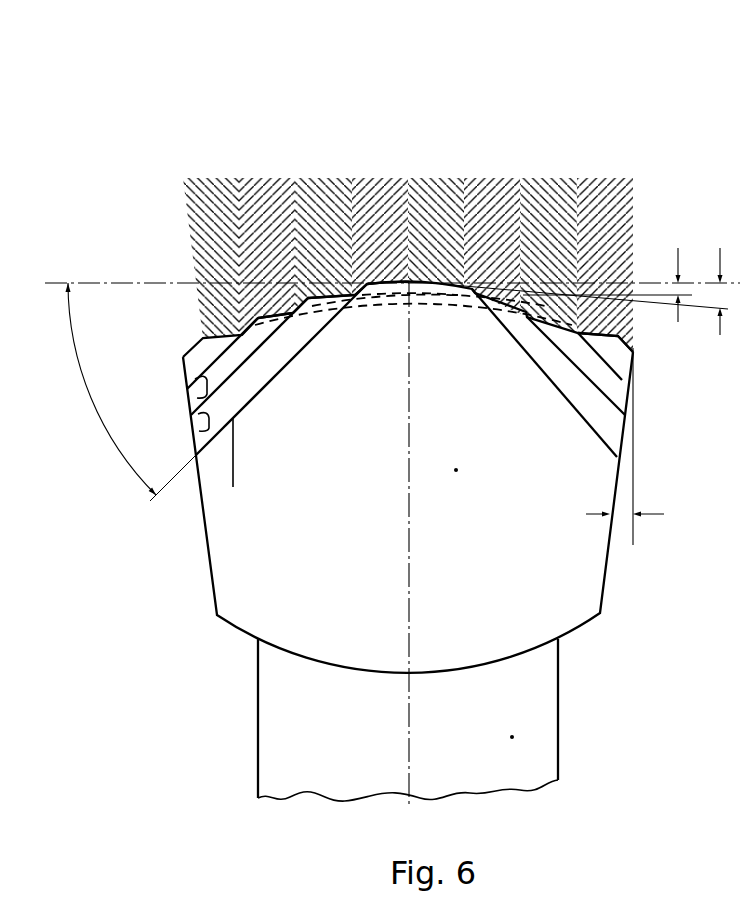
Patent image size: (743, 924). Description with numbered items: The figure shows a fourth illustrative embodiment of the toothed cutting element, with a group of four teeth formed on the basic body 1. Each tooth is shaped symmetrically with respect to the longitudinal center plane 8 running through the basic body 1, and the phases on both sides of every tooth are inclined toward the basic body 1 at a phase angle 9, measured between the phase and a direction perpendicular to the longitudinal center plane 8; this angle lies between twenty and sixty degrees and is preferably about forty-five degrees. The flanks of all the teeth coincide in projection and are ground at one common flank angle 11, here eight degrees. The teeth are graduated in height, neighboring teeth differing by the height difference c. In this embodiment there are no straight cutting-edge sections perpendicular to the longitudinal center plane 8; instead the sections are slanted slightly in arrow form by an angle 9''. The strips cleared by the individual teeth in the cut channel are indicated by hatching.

The basic body 1 is at (512, 737).
The longitudinal center plane 8 is at (413, 723).
The phase angle 9 is at (131, 392).
The angle of slanted sections 9'' is at (584, 291).
The flank angle 11 is at (626, 446).
The height difference c is at (610, 285).